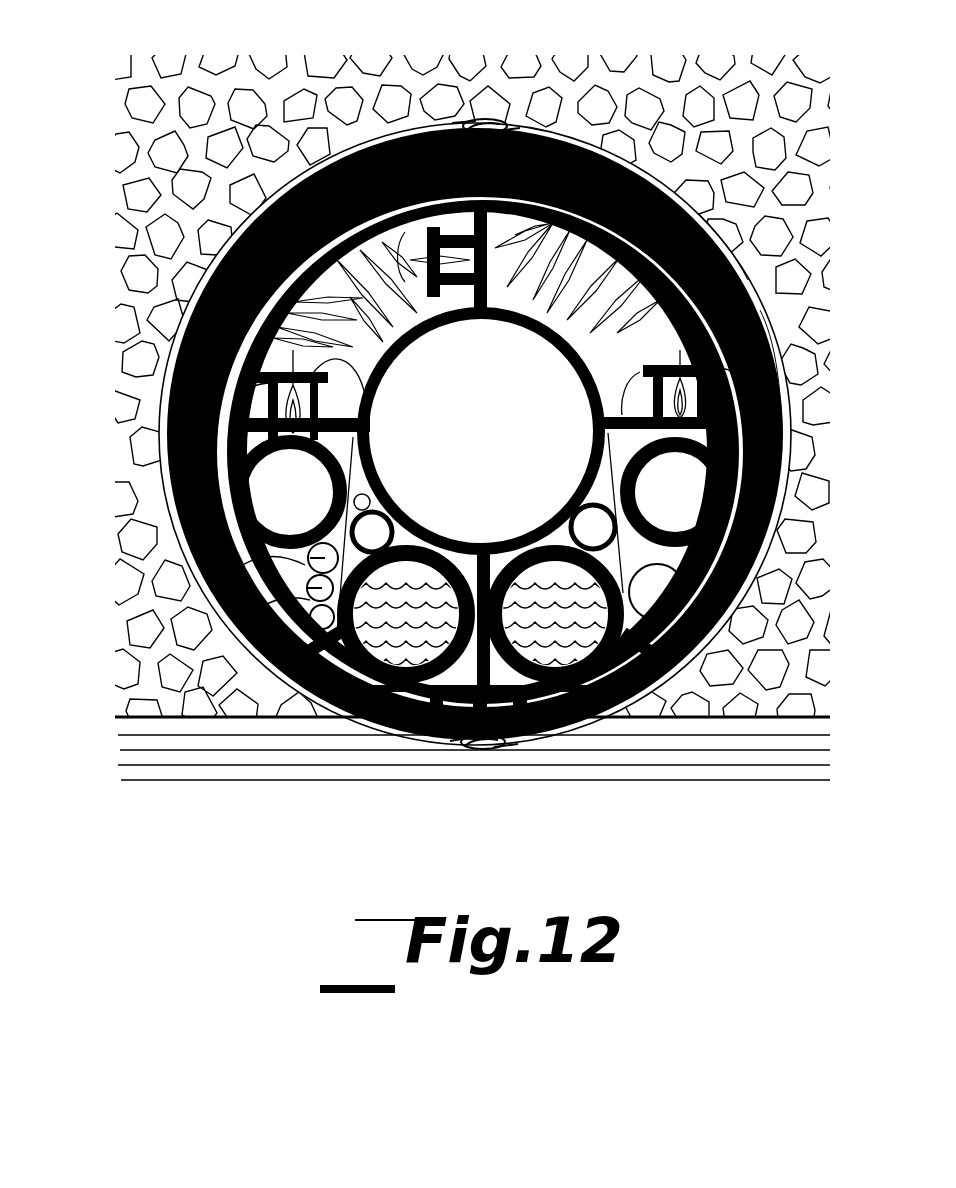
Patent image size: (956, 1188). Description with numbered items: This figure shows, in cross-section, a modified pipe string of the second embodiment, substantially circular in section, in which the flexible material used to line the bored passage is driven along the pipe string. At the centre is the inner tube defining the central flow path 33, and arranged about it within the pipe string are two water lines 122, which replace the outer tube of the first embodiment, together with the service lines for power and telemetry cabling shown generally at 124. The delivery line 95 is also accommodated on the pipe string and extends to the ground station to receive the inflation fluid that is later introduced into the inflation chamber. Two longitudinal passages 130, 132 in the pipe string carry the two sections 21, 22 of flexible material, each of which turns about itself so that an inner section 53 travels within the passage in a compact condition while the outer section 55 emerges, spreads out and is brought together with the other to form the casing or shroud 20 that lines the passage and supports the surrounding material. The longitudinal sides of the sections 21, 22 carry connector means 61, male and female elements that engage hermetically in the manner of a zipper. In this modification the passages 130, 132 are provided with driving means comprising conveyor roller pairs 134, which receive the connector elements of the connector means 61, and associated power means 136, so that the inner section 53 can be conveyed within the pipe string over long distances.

The shroud 20 is at (175, 513).
The first section of flexible material 21 is at (212, 269).
The second section of flexible material 22 is at (762, 308).
The central flow path 33 is at (485, 448).
The inner section 53 is at (607, 140).
The outer section 55 is at (162, 440).
The connector means 61 is at (487, 122).
The delivery line 95 is at (233, 643).
The water lines 122 is at (340, 695).
The service lines 124 is at (297, 653).
The longitudinal passage 130 is at (368, 135).
The longitudinal passage 132 is at (700, 215).
The conveyor roller pairs 134 is at (172, 389).
The power means 136 is at (757, 570).